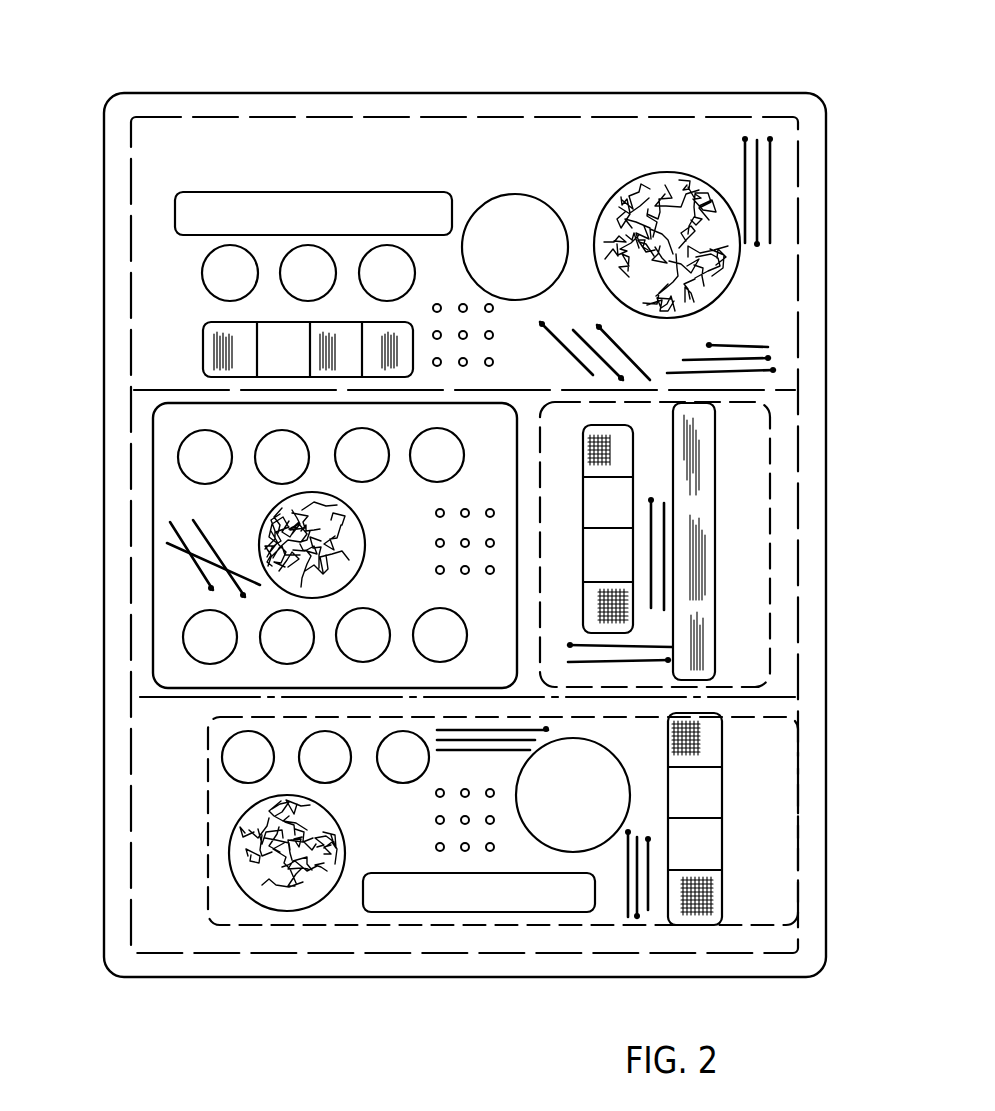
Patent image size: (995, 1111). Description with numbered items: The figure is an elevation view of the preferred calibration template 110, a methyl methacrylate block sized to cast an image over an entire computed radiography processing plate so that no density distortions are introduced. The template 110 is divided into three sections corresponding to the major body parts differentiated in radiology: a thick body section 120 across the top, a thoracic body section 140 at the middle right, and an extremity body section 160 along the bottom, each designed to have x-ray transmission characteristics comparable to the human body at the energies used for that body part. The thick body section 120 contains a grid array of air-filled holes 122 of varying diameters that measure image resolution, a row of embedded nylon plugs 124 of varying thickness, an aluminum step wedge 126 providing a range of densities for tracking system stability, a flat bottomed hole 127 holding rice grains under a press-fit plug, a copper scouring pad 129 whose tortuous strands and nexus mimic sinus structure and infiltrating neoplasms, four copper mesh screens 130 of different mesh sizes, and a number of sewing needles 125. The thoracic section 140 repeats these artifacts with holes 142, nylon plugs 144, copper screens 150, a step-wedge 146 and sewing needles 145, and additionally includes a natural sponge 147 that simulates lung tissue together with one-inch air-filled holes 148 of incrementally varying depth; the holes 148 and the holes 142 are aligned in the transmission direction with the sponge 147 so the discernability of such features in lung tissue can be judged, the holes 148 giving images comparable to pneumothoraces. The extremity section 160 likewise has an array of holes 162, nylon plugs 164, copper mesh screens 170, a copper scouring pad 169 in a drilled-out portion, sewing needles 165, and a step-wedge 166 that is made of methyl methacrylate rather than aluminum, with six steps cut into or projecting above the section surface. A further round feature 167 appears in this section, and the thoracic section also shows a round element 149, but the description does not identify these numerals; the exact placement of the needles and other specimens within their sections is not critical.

The template 110 is at (360, 70).
The thick body section 120 is at (836, 202).
The holes 122 is at (463, 304).
The nylon plugs 124 is at (217, 270).
The sewing needles 125 is at (750, 345).
The step wedge 126 is at (269, 195).
The flat bottomed hole 127 is at (508, 207).
The copper scouring pad 129 is at (663, 187).
The copper mesh screens 130 is at (223, 350).
The thoracic body section 140 is at (858, 432).
The holes 142 is at (440, 574).
The nylon plugs 144 is at (190, 450).
The sewing needles 145 is at (185, 562).
The step-wedge 146 is at (707, 480).
The natural sponge 147 is at (190, 488).
The holes 148 is at (200, 648).
The gauze pad 149 is at (263, 527).
The copper screens 150 is at (620, 513).
The extremity body section 160 is at (838, 880).
The holes 162 is at (439, 850).
The nylon plugs 164 is at (240, 762).
The sewing needles 165 is at (523, 733).
The step-wedges 166 is at (515, 908).
The bowl 167 is at (597, 842).
The copper scouring pad 169 is at (293, 911).
The copper mesh screens 170 is at (715, 757).